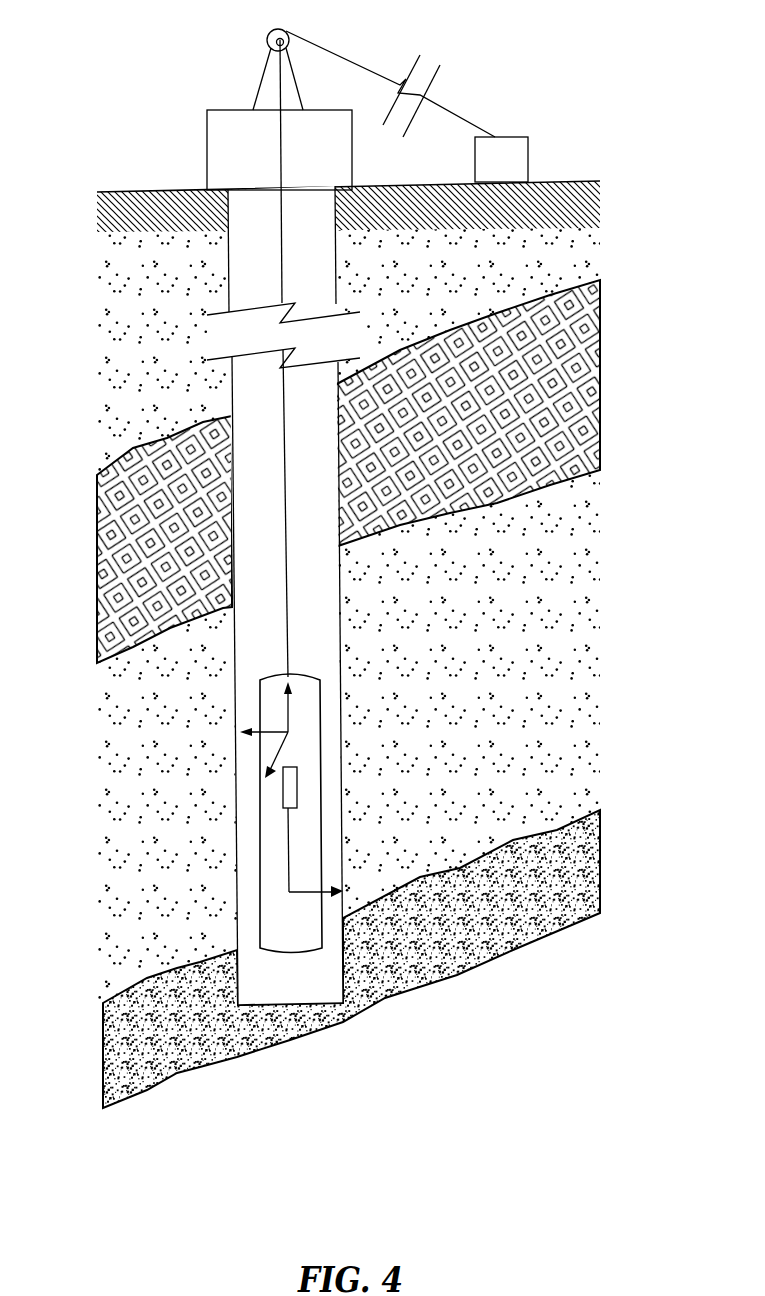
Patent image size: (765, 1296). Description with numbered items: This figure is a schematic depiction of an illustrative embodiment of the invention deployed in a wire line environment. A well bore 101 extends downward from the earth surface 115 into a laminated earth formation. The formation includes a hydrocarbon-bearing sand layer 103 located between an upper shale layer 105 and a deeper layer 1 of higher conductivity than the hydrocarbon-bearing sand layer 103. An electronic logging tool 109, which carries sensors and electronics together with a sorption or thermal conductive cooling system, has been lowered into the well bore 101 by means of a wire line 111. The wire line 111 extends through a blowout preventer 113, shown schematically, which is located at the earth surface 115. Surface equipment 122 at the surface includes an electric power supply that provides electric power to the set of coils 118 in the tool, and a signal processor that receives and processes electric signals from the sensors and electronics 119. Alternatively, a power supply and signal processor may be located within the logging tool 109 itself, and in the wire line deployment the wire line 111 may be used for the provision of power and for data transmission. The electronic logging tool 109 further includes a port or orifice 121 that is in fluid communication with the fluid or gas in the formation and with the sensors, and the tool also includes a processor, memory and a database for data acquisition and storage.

The target formation layer 1 is at (488, 926).
The well bore 101 is at (274, 502).
The hydrocarbon-bearing sand layer 103 is at (514, 662).
The upper shale layer 105 is at (484, 450).
The electronic logging tool 109 is at (334, 813).
The wire line 111 is at (381, 343).
The blowout preventer 113 is at (241, 119).
The earth surface 115 is at (347, 189).
The set of coils 118 is at (223, 709).
The sensors and electronics 119 is at (345, 829).
The port or orifice 121 is at (330, 898).
The surface equipment 122 is at (525, 140).